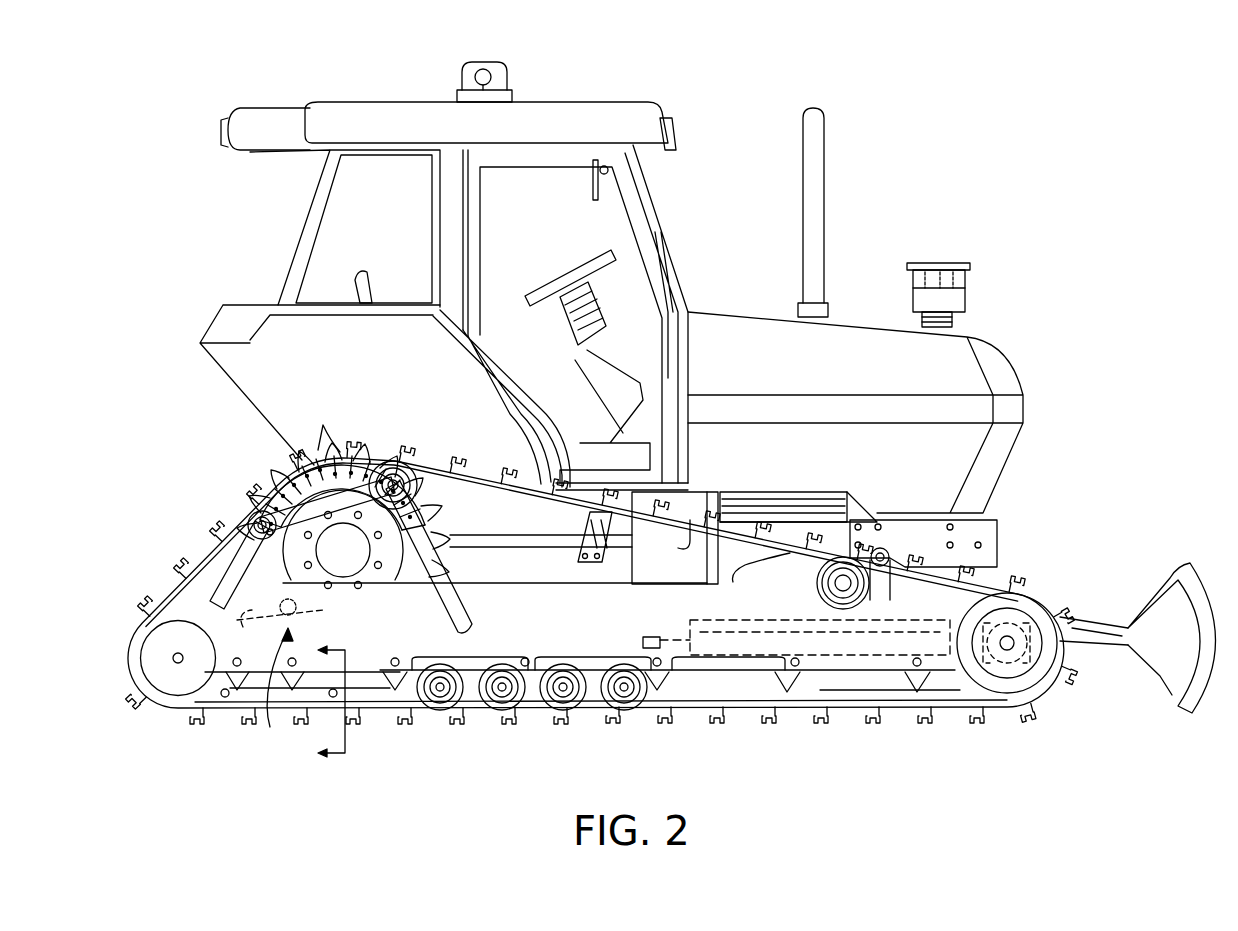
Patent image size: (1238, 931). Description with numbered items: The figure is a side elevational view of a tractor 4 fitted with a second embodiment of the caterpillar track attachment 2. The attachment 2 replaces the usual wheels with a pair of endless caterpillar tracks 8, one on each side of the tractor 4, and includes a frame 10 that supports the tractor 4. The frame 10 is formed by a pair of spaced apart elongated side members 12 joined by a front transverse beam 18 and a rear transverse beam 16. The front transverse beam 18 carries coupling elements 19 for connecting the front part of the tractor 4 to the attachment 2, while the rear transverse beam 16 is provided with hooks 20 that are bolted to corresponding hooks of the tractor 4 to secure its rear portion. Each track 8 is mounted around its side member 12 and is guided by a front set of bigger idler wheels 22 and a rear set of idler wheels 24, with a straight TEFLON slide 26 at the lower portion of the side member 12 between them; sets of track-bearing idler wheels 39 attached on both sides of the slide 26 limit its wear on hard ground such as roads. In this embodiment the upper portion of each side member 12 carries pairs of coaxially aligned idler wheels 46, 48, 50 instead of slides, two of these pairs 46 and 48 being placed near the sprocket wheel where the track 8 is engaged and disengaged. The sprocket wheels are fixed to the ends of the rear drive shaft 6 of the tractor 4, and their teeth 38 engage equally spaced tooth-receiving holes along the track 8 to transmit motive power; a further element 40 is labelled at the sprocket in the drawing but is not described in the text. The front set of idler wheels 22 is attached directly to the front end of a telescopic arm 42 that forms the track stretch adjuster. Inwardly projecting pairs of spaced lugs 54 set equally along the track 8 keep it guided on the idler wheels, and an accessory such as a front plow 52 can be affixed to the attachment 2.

The caterpillar track attachment 2 is at (790, 718).
The tractor 4 is at (738, 288).
The rear drive shaft 6 is at (357, 553).
The endless caterpillar track 8 is at (220, 530).
The frame 10 is at (299, 705).
The side member 12 is at (540, 615).
The rear transverse beam 16 is at (242, 612).
The front transverse beam 18 is at (830, 622).
The coupling elements 19 is at (890, 565).
The hooks 20 is at (312, 610).
The front set of idler wheels 22 is at (1048, 672).
The rear set of idler wheels 24 is at (178, 710).
The straight slide 26 is at (700, 712).
The teeth 38 is at (323, 435).
The track-bearing idler wheels 39 is at (500, 712).
The sprocket teeth 40 is at (450, 526).
The telescopic arm 42 is at (814, 660).
The pair of idler wheels 46 is at (258, 500).
The pair of idler wheels 48 is at (405, 472).
The pair of idler wheels 50 is at (838, 562).
The front plow 52 is at (1148, 640).
The lugs 54 is at (683, 545).